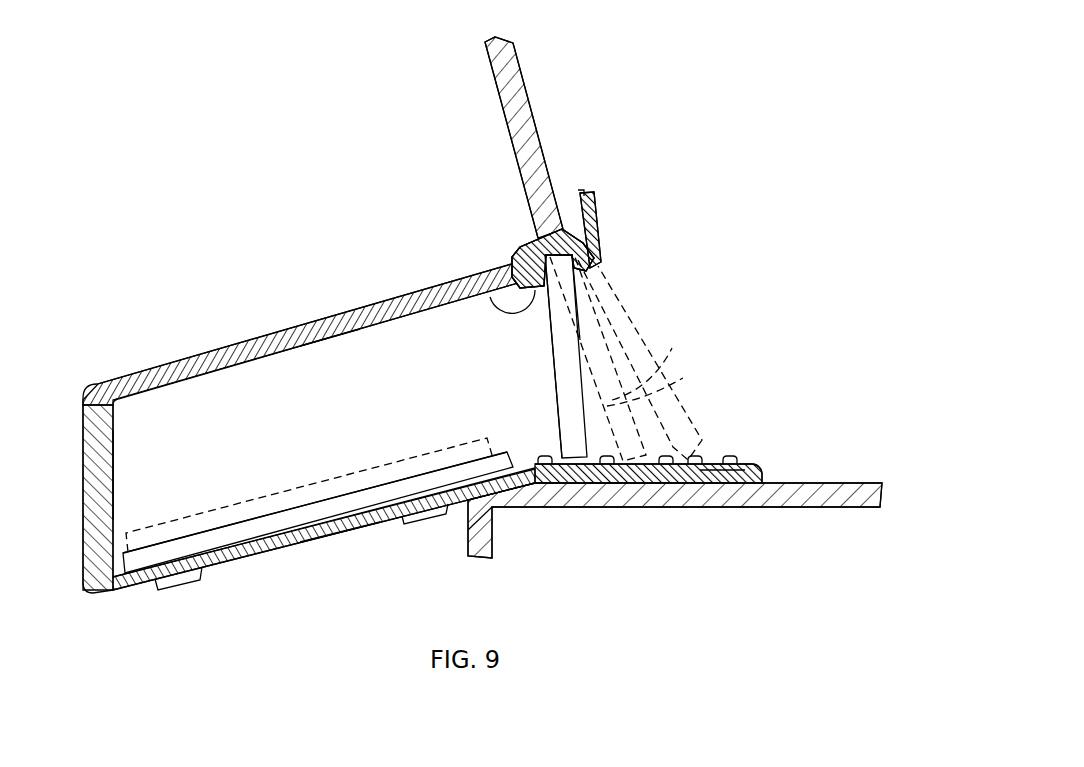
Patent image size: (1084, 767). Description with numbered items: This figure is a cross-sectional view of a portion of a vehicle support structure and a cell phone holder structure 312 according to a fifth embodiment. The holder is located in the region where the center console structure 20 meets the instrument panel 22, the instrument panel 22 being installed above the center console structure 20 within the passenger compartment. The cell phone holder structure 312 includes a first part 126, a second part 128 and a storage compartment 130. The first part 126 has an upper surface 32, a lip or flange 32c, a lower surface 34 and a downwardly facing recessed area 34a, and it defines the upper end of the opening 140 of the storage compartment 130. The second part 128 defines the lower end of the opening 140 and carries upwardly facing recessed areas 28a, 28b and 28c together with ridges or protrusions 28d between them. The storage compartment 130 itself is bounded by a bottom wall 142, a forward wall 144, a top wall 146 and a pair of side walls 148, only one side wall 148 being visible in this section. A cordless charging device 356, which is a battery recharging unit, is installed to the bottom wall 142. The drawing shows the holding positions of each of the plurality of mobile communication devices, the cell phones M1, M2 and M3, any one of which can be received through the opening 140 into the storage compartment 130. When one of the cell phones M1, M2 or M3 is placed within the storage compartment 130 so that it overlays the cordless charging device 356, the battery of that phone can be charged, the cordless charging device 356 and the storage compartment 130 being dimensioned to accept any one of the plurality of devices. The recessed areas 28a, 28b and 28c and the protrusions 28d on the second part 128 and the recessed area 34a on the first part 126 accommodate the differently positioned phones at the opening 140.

The center console structure 20 is at (840, 483).
The instrument panel 22 is at (522, 108).
The upper surface 32 is at (532, 244).
The lip or flange 32c is at (596, 198).
The lower surface 34 is at (577, 264).
The downwardly facing recessed area 34a is at (578, 284).
The first part 126 is at (612, 216).
The second part 128 is at (772, 468).
The storage compartment 130 is at (240, 343).
The opening 140 is at (485, 282).
The bottom wall 142 is at (290, 528).
The forward wall 144 is at (116, 496).
The top wall 146 is at (325, 346).
The side wall 148 is at (233, 470).
The cell phone holder structure 312 is at (744, 131).
The cordless charging device 356 is at (343, 507).
The upwardly facing recessed area 28a is at (569, 458).
The upwardly facing recessed area 28b is at (641, 456).
The upwardly facing recessed area 28c is at (724, 477).
The ridges or protrusions 28d is at (588, 442).
The cell phone M1 is at (358, 483).
The cell phone M2 is at (634, 359).
The cell phone M3 is at (641, 360).